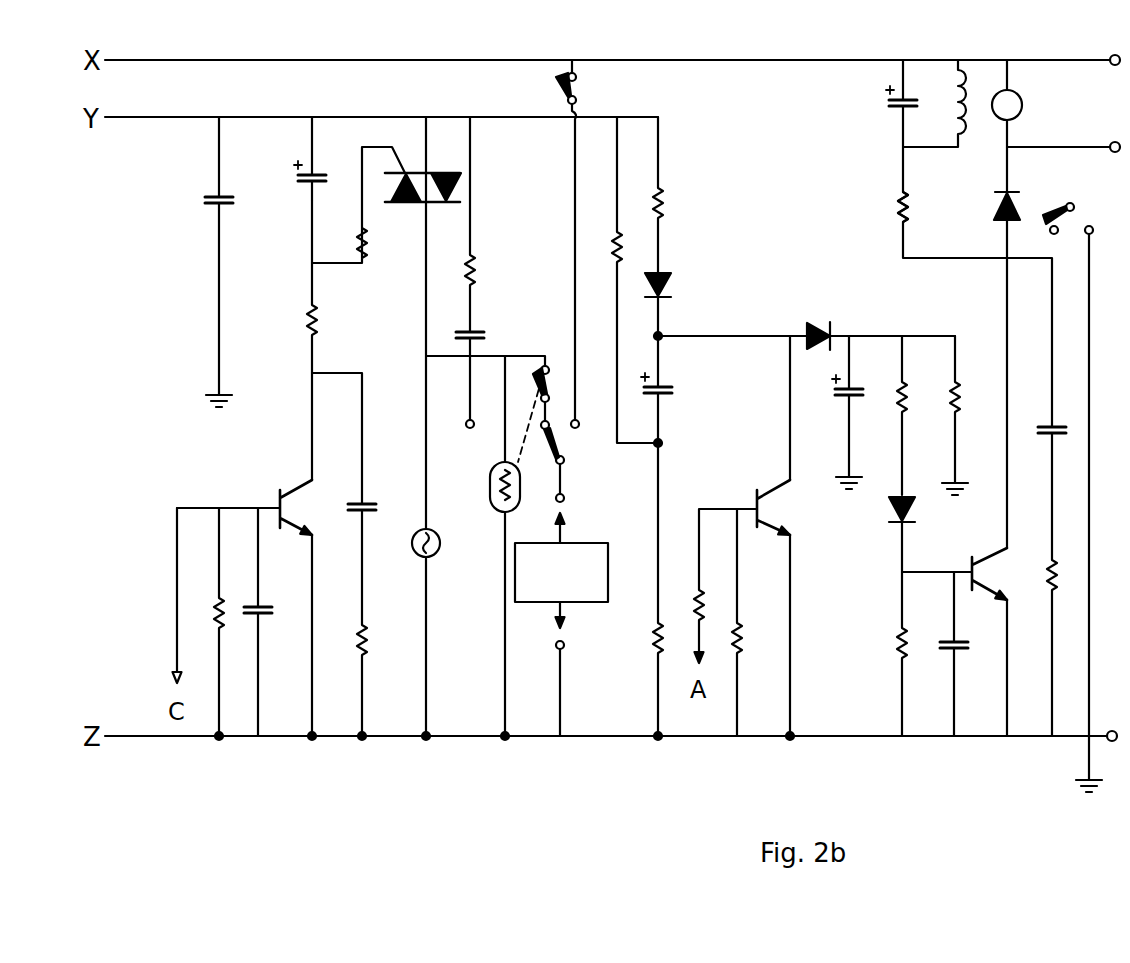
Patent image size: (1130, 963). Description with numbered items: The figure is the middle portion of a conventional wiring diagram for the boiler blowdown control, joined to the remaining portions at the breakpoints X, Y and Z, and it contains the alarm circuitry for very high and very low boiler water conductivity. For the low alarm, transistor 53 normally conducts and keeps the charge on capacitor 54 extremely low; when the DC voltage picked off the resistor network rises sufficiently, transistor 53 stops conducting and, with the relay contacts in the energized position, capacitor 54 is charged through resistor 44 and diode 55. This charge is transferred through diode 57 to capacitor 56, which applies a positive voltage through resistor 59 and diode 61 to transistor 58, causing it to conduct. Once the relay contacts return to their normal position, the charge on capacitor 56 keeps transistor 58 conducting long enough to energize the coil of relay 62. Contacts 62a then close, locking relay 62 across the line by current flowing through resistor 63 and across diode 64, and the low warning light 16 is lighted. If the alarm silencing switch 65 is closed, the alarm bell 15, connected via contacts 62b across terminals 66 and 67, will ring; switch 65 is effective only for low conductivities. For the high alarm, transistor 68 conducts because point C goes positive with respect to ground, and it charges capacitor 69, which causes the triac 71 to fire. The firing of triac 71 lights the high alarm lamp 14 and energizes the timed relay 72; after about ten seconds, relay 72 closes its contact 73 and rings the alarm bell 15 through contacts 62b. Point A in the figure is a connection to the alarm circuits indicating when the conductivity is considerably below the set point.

The alarm lamp 14 is at (440, 545).
The alarm bell 15 is at (600, 576).
The warning light 16 is at (1025, 104).
The resistor 44 is at (668, 216).
The transistor 53 is at (770, 492).
The capacitor 54 is at (670, 387).
The diode 55 is at (674, 292).
The capacitor 56 is at (858, 388).
The diode 57 is at (814, 326).
The transistor 58 is at (990, 549).
The resistor 59 is at (912, 388).
The diode 61 is at (890, 512).
The relay 62 is at (971, 120).
The contacts 62a is at (1058, 204).
The contacts 62b is at (565, 450).
The resistor 63 is at (894, 210).
The diode 64 is at (992, 222).
The switch 65 is at (578, 100).
The terminal 66 is at (565, 502).
The terminal 67 is at (564, 646).
The transistor 68 is at (295, 488).
The capacitor 69 is at (298, 176).
The triac 71 is at (447, 170).
The timed relay 72 is at (488, 486).
The contact 73 is at (548, 383).